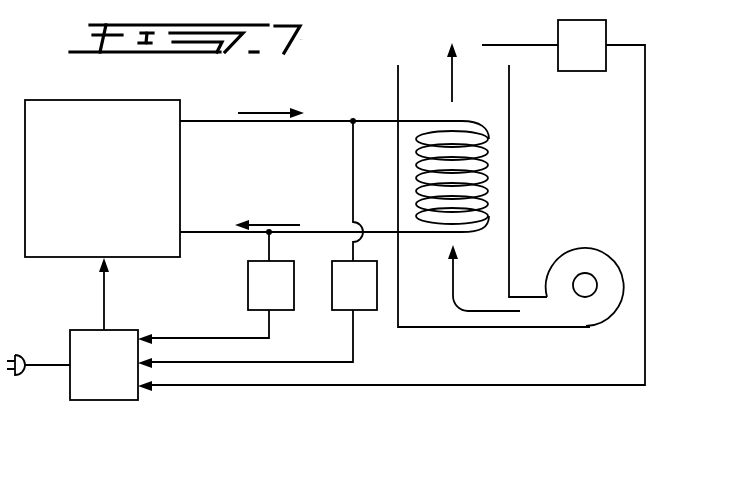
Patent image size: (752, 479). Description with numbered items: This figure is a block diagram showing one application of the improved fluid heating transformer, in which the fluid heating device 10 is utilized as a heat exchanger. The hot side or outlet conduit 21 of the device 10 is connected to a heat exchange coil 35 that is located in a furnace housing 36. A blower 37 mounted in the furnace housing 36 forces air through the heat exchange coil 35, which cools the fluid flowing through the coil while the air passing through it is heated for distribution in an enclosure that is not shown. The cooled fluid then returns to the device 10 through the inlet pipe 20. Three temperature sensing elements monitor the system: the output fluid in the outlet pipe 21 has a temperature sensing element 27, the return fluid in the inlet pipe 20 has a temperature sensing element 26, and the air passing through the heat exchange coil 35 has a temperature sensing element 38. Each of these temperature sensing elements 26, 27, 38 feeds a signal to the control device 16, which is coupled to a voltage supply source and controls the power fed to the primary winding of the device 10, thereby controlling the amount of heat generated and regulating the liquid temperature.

The fluid heating device 10 is at (188, 99).
The control device 16 is at (122, 398).
The inlet pipe 20 is at (221, 232).
The outlet conduit 21 is at (371, 121).
The temperature sensing element 26 is at (248, 292).
The temperature sensing element 27 is at (340, 262).
The heat exchange coil 35 is at (489, 170).
The furnace housing 36 is at (509, 125).
The blower 37 is at (578, 262).
The temperature sensing element 38 is at (592, 70).